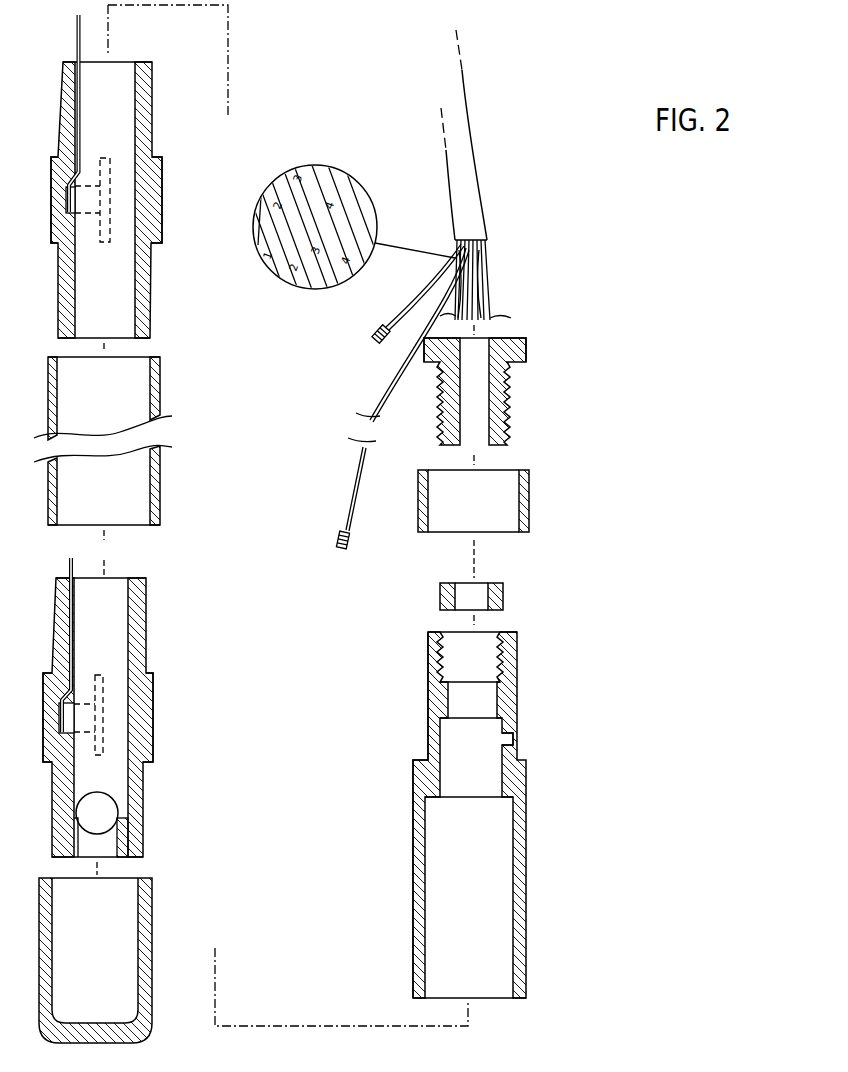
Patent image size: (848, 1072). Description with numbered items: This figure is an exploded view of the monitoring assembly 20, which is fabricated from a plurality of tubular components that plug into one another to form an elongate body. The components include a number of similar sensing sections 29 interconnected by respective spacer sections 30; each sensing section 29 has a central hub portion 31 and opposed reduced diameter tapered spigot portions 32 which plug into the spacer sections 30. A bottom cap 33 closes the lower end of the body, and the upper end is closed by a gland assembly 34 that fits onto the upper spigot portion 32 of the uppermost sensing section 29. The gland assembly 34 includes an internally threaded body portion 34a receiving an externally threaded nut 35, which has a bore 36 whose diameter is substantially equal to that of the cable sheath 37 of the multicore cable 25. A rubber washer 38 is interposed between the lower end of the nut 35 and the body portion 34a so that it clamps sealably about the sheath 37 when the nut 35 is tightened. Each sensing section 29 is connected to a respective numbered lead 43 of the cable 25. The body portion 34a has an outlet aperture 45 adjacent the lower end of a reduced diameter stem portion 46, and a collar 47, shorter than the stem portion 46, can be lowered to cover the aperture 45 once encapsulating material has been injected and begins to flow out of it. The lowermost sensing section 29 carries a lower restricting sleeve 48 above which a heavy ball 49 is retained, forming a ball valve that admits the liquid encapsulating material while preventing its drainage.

The monitoring assembly 20 is at (510, 245).
The multicore cable 25 is at (477, 208).
The sensing section 29 is at (135, 222).
The spacer section 30 is at (130, 492).
The central hub portion 31 is at (162, 200).
The tapered spigot portion 32 is at (152, 98).
The bottom cap 33 is at (152, 945).
The gland assembly 34 is at (533, 713).
The internally threaded body portion 34a is at (514, 705).
The externally threaded nut 35 is at (497, 400).
The bore 36 is at (481, 352).
The cable sheath 37 is at (472, 175).
The rubber washer 38 is at (503, 597).
The numbered lead 43 is at (486, 256).
The outlet aperture 45 is at (514, 740).
The reduced diameter stem portion 46 is at (427, 702).
The collar 47 is at (524, 500).
The lower restricting sleeve 48 is at (120, 857).
The heavy ball 49 is at (108, 808).